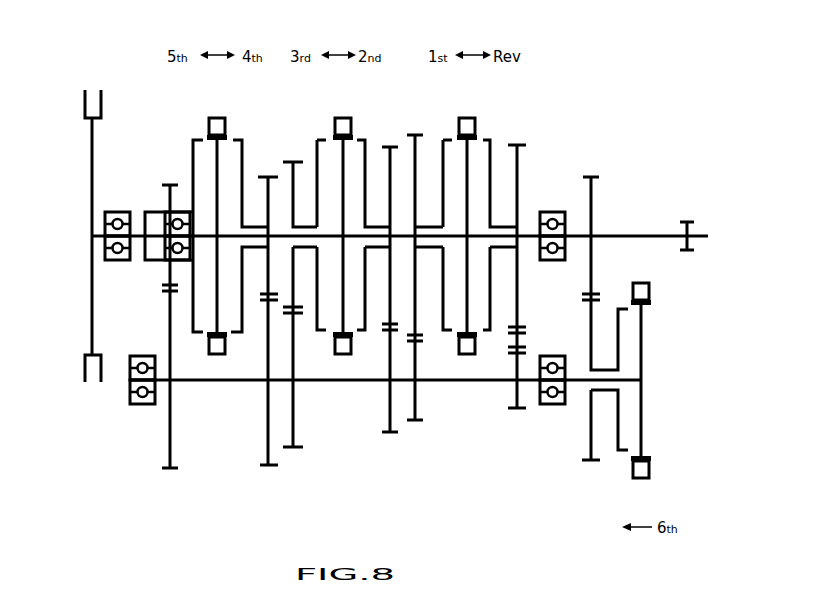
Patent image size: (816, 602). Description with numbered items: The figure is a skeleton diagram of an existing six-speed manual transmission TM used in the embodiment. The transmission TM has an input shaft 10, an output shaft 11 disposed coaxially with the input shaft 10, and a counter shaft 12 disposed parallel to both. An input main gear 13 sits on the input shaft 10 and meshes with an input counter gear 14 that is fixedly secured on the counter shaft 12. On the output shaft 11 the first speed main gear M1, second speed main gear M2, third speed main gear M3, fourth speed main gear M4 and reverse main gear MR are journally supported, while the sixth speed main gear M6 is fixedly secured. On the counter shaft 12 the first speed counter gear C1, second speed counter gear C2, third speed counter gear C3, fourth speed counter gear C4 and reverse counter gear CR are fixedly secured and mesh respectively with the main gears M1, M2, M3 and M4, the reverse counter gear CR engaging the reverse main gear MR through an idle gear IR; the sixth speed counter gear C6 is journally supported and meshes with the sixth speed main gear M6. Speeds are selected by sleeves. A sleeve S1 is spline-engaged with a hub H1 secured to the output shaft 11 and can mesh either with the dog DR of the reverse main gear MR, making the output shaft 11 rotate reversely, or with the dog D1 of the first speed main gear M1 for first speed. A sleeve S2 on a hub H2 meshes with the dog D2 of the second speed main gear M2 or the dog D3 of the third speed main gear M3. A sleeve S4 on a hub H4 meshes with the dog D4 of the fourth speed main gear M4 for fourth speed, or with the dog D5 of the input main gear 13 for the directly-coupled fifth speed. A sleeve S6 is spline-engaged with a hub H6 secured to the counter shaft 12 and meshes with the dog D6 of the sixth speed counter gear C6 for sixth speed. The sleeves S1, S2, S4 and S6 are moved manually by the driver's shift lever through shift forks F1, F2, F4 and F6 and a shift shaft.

The input shaft 10 is at (100, 233).
The output shaft 11 is at (620, 234).
The counter shaft 12 is at (222, 383).
The input main gear 13 is at (167, 280).
The input counter gear 14 is at (165, 459).
The transmission TM is at (537, 110).
The sleeve S4 is at (208, 132).
The shift fork F4 is at (214, 117).
The hub H4 is at (212, 175).
The 4th speed main gear M4 is at (255, 193).
The 3rd speed main gear M3 is at (297, 195).
The dog D5 is at (202, 346).
The dog D4 is at (249, 302).
The 4th speed counter gear C4 is at (271, 369).
The 3rd speed counter gear C3 is at (297, 360).
The sleeve S2 is at (335, 133).
The shift fork F2 is at (343, 117).
The hub H2 is at (345, 168).
The 2nd speed main gear M2 is at (389, 188).
The 1st speed main gear M1 is at (425, 181).
The dog D3 is at (330, 345).
The dog D2 is at (349, 248).
The 2nd speed counter gear C2 is at (392, 354).
The 1st speed counter gear C1 is at (421, 347).
The sleeve S1 is at (477, 130).
The shift fork F1 is at (465, 117).
The hub H1 is at (468, 190).
The reverse main gear MR is at (518, 186).
The dog D1 is at (456, 247).
The dog DR is at (505, 343).
The idle gear IR is at (520, 345).
The reverse counter gear CR is at (519, 342).
The 6th speed main gear M6 is at (604, 263).
The 6th speed counter gear C6 is at (602, 438).
The sleeve S6 is at (652, 298).
The hub H6 is at (642, 418).
The dog D6 is at (620, 453).
The shift fork F6 is at (637, 478).